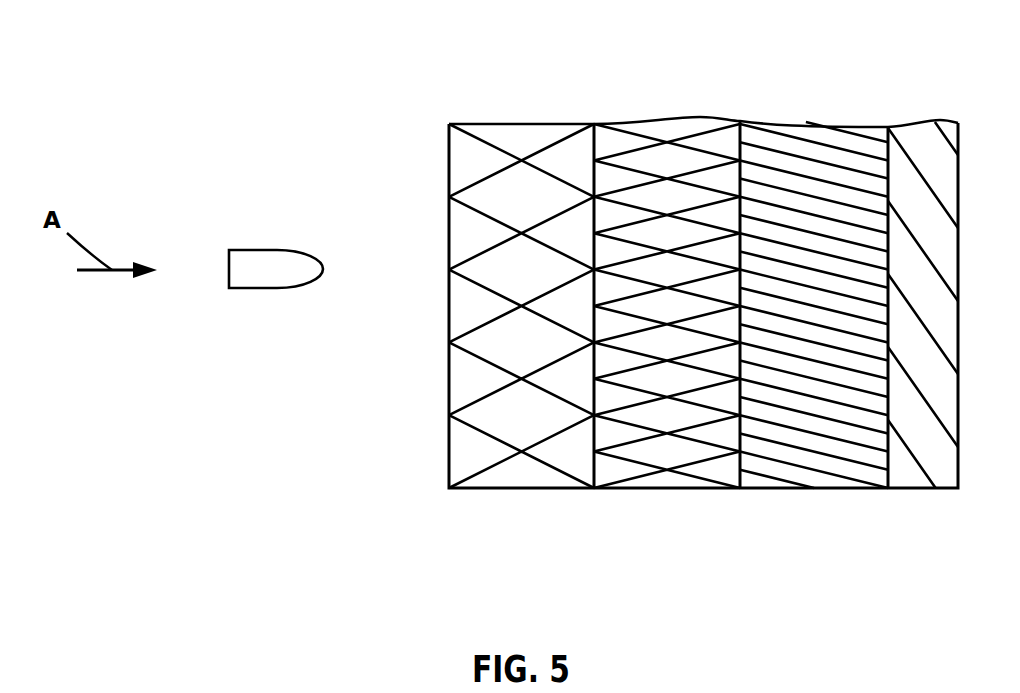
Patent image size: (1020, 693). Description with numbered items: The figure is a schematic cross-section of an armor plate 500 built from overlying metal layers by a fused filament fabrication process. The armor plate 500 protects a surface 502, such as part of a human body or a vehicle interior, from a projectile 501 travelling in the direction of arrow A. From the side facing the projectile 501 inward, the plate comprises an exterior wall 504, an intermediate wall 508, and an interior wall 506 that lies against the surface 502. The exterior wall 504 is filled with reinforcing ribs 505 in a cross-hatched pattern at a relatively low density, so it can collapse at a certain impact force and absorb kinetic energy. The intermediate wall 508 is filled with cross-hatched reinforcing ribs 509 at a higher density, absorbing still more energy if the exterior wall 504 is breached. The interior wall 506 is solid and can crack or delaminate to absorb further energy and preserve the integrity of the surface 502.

The armor plate 500 is at (265, 82).
The projectile 501 is at (277, 260).
The surface 502 is at (915, 481).
The exterior wall 504 is at (505, 483).
The reinforcing ribs 505 is at (493, 145).
The interior wall 506 is at (832, 482).
The intermediate wall 508 is at (668, 482).
The reinforcing ribs 509 is at (637, 135).